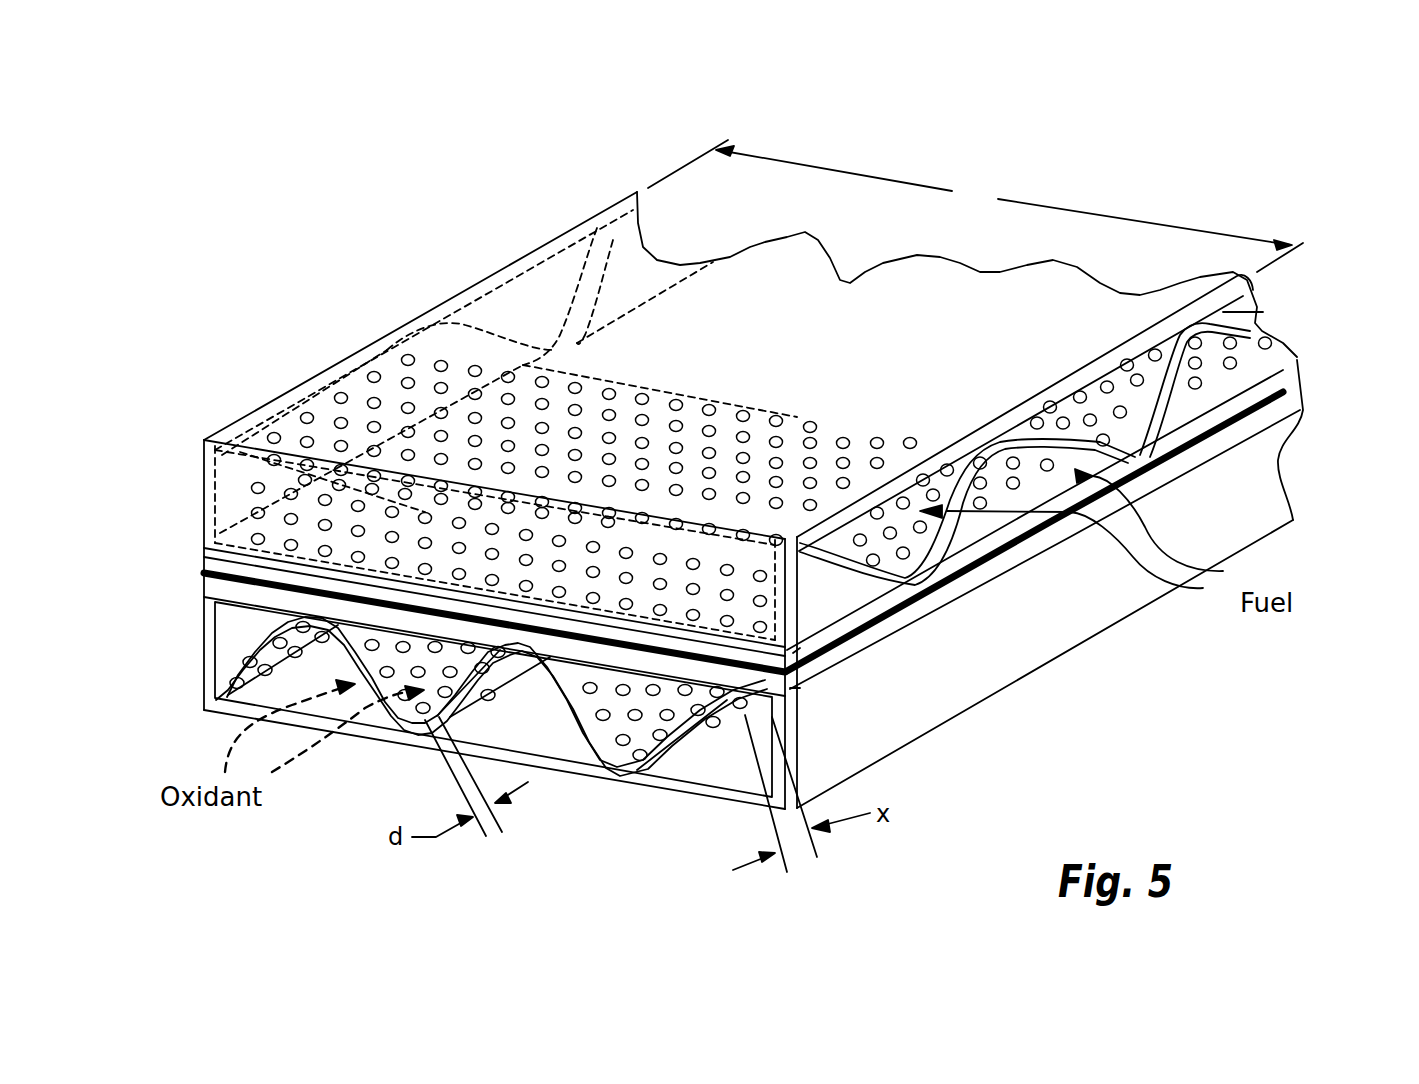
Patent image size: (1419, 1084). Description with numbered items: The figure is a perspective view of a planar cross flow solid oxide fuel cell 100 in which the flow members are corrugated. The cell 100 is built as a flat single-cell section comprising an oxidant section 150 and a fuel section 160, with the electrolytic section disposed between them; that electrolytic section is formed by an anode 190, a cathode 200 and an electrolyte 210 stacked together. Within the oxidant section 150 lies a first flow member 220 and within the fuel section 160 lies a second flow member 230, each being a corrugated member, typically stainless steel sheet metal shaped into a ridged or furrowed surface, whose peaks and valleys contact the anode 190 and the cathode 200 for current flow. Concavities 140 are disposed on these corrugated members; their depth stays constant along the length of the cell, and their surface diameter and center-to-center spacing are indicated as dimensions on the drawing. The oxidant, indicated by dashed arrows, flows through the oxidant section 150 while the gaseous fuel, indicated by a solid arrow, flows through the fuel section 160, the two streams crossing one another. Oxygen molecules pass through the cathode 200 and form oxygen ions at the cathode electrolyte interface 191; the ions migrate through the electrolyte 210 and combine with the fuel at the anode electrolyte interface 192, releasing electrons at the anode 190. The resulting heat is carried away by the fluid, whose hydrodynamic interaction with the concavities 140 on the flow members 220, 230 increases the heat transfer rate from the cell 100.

The solid oxide fuel cell 100 is at (358, 249).
The concavities 140 is at (343, 398).
The oxidant section 150 is at (1018, 619).
The fuel section 160 is at (776, 359).
The anode 190 is at (204, 549).
The cathode electrolyte interface 191 is at (789, 687).
The anode electrolyte interface 192 is at (793, 654).
The cathode 200 is at (212, 588).
The electrolyte 210 is at (204, 574).
The first flow member 220 is at (214, 674).
The second flow member 230 is at (1263, 312).